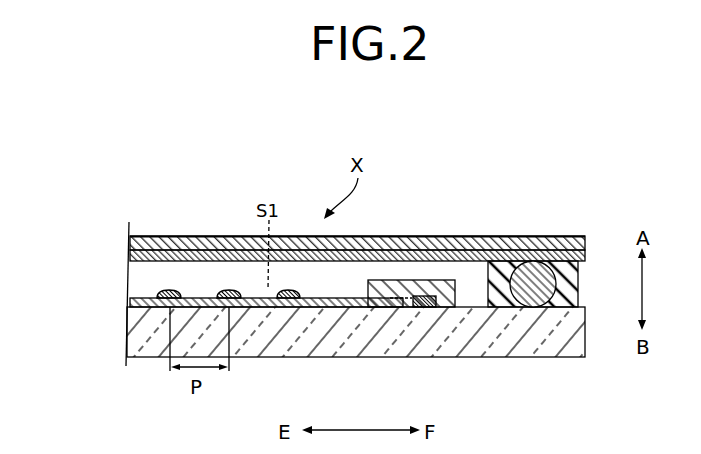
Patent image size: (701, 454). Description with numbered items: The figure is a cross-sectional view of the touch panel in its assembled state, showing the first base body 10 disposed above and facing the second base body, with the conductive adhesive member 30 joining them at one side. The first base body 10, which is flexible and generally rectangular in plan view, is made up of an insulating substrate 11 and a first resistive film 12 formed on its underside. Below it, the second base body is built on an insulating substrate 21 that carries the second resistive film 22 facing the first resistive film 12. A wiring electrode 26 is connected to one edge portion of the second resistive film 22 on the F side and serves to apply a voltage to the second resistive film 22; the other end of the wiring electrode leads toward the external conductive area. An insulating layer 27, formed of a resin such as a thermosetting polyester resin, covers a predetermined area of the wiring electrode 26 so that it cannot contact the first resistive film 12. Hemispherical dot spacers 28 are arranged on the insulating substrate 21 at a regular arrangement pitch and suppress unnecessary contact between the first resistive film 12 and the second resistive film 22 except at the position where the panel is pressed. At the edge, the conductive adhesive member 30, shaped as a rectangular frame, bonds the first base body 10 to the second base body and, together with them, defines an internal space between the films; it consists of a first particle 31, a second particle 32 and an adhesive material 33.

The first base body 10 is at (307, 244).
The insulating substrate 11 is at (130, 242).
The first resistive film 12 is at (130, 256).
The insulating substrate 21 is at (130, 345).
The second resistive film 22 is at (130, 303).
The wiring electrode 26 is at (423, 307).
The insulating layer 27 is at (418, 297).
The dot spacer 28 is at (178, 291).
The conductive adhesive member 30 is at (551, 233).
The first particle 31 is at (548, 272).
The second particle 32 is at (558, 251).
The adhesive material 33 is at (506, 282).